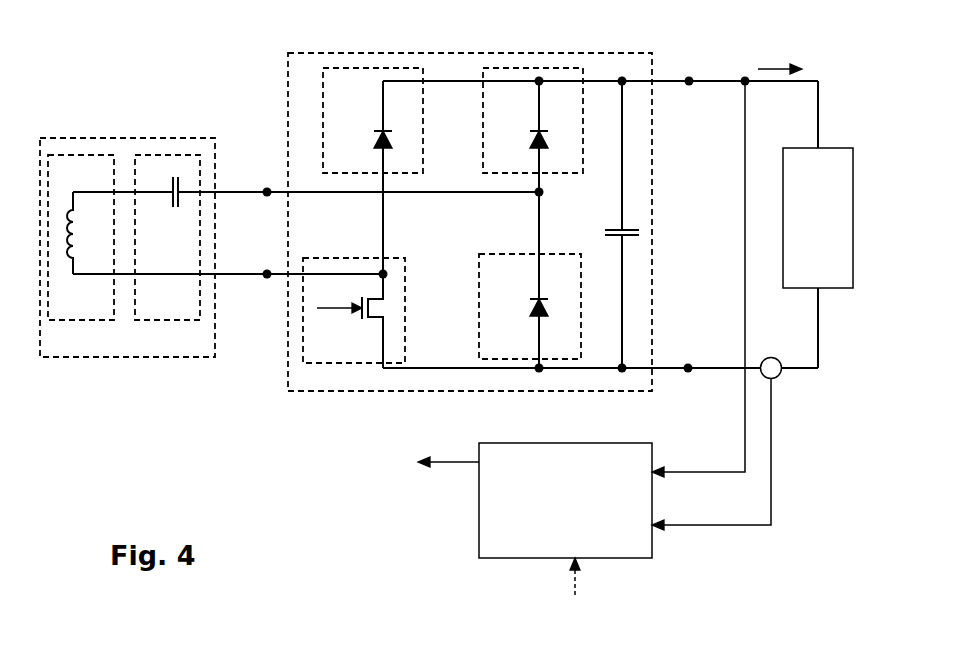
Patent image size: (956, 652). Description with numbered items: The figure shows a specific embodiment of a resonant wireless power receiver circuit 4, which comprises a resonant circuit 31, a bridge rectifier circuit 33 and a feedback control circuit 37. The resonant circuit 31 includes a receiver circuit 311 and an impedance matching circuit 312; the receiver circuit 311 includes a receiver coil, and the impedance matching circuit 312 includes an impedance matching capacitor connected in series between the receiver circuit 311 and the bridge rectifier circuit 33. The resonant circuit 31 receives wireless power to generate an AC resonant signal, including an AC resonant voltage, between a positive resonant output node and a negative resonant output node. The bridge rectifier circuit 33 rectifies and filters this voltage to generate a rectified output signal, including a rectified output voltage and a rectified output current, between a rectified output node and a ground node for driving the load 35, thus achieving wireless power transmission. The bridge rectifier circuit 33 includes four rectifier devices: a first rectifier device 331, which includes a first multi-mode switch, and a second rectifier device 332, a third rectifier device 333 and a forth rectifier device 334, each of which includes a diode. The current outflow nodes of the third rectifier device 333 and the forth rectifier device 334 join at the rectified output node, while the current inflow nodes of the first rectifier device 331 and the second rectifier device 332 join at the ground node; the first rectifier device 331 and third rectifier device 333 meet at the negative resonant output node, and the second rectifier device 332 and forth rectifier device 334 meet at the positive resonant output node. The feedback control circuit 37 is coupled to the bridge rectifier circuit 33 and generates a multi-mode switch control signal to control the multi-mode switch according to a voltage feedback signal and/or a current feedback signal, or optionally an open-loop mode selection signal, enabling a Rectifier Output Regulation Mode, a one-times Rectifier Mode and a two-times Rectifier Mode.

The resonant wireless power receiver circuit 4 is at (243, 69).
The resonant circuit 31 is at (203, 357).
The receiver circuit 311 is at (110, 316).
The impedance matching circuit 312 is at (193, 316).
The bridge rectifier circuit 33 is at (360, 53).
The first rectifier device 331 is at (352, 360).
The second rectifier device 332 is at (527, 357).
The third rectifier device 333 is at (370, 172).
The forth rectifier device 334 is at (530, 172).
The load 35 is at (827, 278).
The feedback control circuit 37 is at (572, 548).